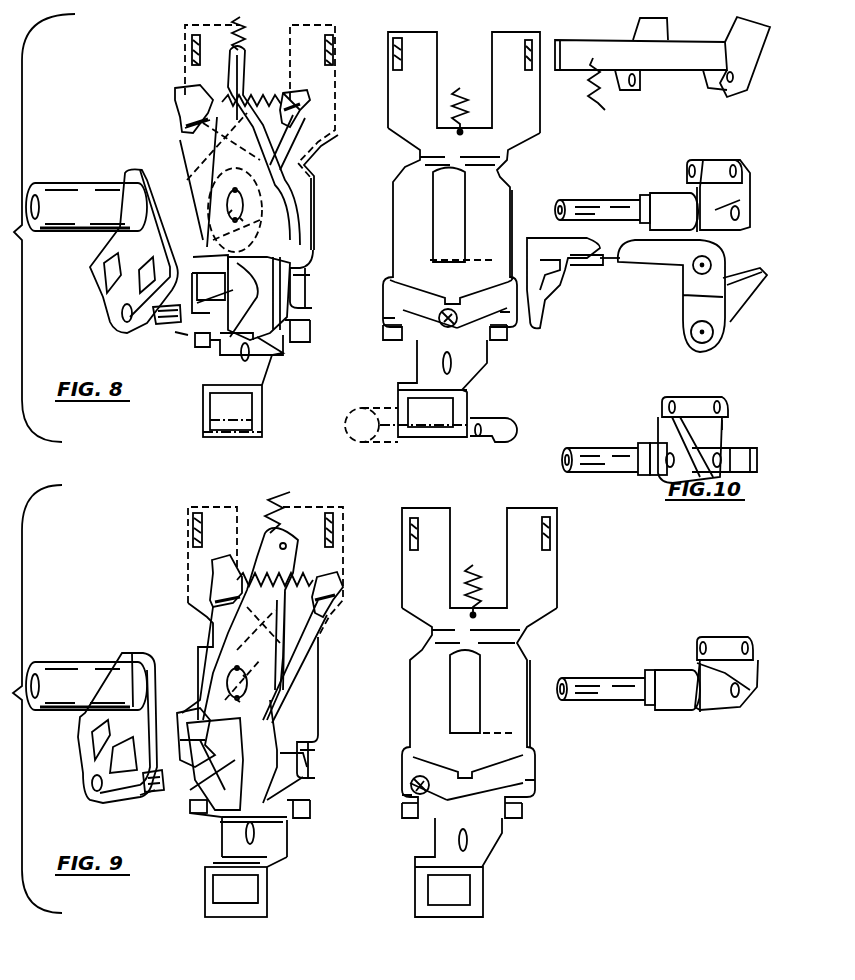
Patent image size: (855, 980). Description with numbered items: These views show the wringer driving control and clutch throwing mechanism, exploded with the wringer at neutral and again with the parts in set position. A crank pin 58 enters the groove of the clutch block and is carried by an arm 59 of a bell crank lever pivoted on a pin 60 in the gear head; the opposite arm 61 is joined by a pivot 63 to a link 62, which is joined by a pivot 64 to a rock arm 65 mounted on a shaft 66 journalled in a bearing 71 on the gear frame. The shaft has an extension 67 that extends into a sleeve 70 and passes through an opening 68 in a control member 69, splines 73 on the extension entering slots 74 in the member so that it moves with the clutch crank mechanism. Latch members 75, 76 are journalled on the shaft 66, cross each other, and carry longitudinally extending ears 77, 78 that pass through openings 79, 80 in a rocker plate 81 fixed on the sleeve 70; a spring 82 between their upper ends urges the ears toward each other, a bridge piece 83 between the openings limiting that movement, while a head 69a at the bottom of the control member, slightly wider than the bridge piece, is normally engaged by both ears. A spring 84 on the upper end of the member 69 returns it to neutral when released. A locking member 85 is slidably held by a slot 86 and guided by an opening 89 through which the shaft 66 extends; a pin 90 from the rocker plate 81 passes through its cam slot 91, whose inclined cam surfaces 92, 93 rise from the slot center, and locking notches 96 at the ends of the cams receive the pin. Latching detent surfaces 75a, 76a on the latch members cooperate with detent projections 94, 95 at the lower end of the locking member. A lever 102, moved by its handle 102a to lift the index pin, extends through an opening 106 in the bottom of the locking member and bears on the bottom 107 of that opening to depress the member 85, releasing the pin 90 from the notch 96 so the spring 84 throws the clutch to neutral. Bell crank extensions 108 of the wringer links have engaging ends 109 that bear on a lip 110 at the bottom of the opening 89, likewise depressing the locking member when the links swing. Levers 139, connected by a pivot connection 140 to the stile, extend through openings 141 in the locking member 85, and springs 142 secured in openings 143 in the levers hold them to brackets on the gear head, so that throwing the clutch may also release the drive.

In FIG. 10, the crank pin 58 is at (748, 452).
In FIG. 8, the arm 59 is at (716, 210).
In FIG. 10, the arm 59 is at (712, 448).
In FIG. 9, the arm 59 is at (728, 696).
In FIG. 8, the pin 60 is at (740, 216).
In FIG. 10, the pin 60 is at (660, 480).
In FIG. 8, the opposite arm 61 is at (748, 181).
In FIG. 10, the opposite arm 61 is at (658, 433).
In FIG. 9, the opposite arm 61 is at (760, 666).
In FIG. 8, the link 62 is at (718, 154).
In FIG. 10, the link 62 is at (690, 404).
In FIG. 9, the link 62 is at (722, 645).
In FIG. 8, the pivot 63 is at (740, 166).
In FIG. 10, the pivot 63 is at (668, 408).
In FIG. 9, the pivot 63 is at (750, 645).
In FIG. 8, the pivot 64 is at (689, 168).
In FIG. 10, the pivot 64 is at (720, 406).
In FIG. 9, the pivot 64 is at (700, 645).
In FIG. 8, the rock arm 65 is at (685, 200).
In FIG. 10, the rock arm 65 is at (722, 425).
In FIG. 9, the rock arm 65 is at (705, 705).
In FIG. 8, the shaft 66 is at (660, 195).
In FIG. 10, the shaft 66 is at (652, 474).
In FIG. 9, the shaft 66 is at (672, 708).
In FIG. 8, the shaft extension 67 is at (620, 200).
In FIG. 10, the shaft extension 67 is at (598, 455).
In FIG. 9, the shaft extension 67 is at (602, 680).
In FIG. 8, the opening 68 is at (229, 216).
In FIG. 9, the opening 68 is at (248, 681).
In FIG. 8, the control member 69 is at (262, 152).
In FIG. 9, the control member 69 is at (283, 643).
In FIG. 8, the head 69a is at (215, 320).
In FIG. 9, the head 69a is at (190, 790).
In FIG. 8, the sleeve 70 is at (94, 224).
In FIG. 9, the sleeve 70 is at (80, 708).
In FIG. 8, the bearing 71 is at (243, 219).
In FIG. 9, the bearing 71 is at (239, 704).
In FIG. 8, the splines 73 is at (640, 223).
In FIG. 10, the splines 73 is at (636, 470).
In FIG. 9, the splines 73 is at (640, 703).
In FIG. 8, the slots 74 is at (238, 194).
In FIG. 9, the slots 74 is at (242, 672).
In FIG. 8, the latch member 75 is at (292, 120).
In FIG. 9, the latch member 75 is at (322, 640).
In FIG. 8, the latching detent surface 75a is at (225, 345).
In FIG. 9, the latching detent surface 75a is at (195, 813).
In FIG. 8, the latch member 76 is at (182, 120).
In FIG. 9, the latch member 76 is at (213, 630).
In FIG. 8, the latching detent surface 76a is at (285, 345).
In FIG. 9, the latching detent surface 76a is at (212, 820).
In FIG. 8, the ear 77 is at (200, 312).
In FIG. 9, the ear 77 is at (188, 750).
In FIG. 8, the ear 78 is at (255, 286).
In FIG. 9, the ear 78 is at (200, 775).
In FIG. 8, the opening 79 is at (108, 285).
In FIG. 9, the opening 79 is at (90, 745).
In FIG. 8, the opening 80 is at (170, 333).
In FIG. 9, the opening 80 is at (150, 745).
In FIG. 8, the rocker plate 81 is at (103, 268).
In FIG. 9, the rocker plate 81 is at (85, 762).
In FIG. 8, the spring 82 is at (252, 95).
In FIG. 9, the spring 82 is at (300, 572).
In FIG. 8, the bridge piece 83 is at (122, 292).
In FIG. 9, the bridge piece 83 is at (100, 775).
In FIG. 8, the spring 84 is at (246, 30).
In FIG. 9, the spring 84 is at (290, 494).
In FIG. 8, the locking member 85 is at (504, 204).
In FIG. 9, the locking member 85 is at (412, 700).
In FIG. 8, the slot 86 is at (455, 362).
In FIG. 9, the slot 86 is at (468, 840).
In FIG. 8, the opening 89 is at (466, 227).
In FIG. 9, the opening 89 is at (480, 703).
In FIG. 8, the pin 90 is at (447, 328).
In FIG. 9, the pin 90 is at (412, 782).
In FIG. 8, the cam slot 91 is at (397, 287).
In FIG. 9, the cam slot 91 is at (528, 767).
In FIG. 8, the cam surface 92 is at (430, 323).
In FIG. 9, the cam surface 92 is at (440, 800).
In FIG. 8, the cam surface 93 is at (470, 325).
In FIG. 9, the cam surface 93 is at (488, 798).
In FIG. 8, the detent projection 94 is at (392, 342).
In FIG. 9, the detent projection 94 is at (400, 816).
In FIG. 8, the detent projection 95 is at (505, 338).
In FIG. 9, the detent projection 95 is at (525, 815).
In FIG. 8, the locking notches 96 is at (390, 318).
In FIG. 9, the locking notches 96 is at (402, 796).
In FIG. 8, the lever 102 is at (478, 418).
In FIG. 8, the handle 102a is at (368, 440).
In FIG. 8, the opening 106 is at (406, 405).
In FIG. 9, the opening 106 is at (465, 892).
In FIG. 8, the bottom 107 is at (430, 430).
In FIG. 9, the bottom 107 is at (448, 908).
In FIG. 8, the bell crank extension 108 is at (655, 258).
In FIG. 8, the engaging end 109 is at (626, 258).
In FIG. 8, the lip 110 is at (616, 285).
In FIG. 9, the lip 110 is at (468, 733).
In FIG. 8, the lever 139 is at (706, 64).
In FIG. 8, the pivot connection 140 is at (748, 82).
In FIG. 8, the openings 141 is at (528, 72).
In FIG. 9, the openings 141 is at (549, 537).
In FIG. 8, the springs 142 is at (609, 91).
In FIG. 8, the openings 143 is at (591, 68).